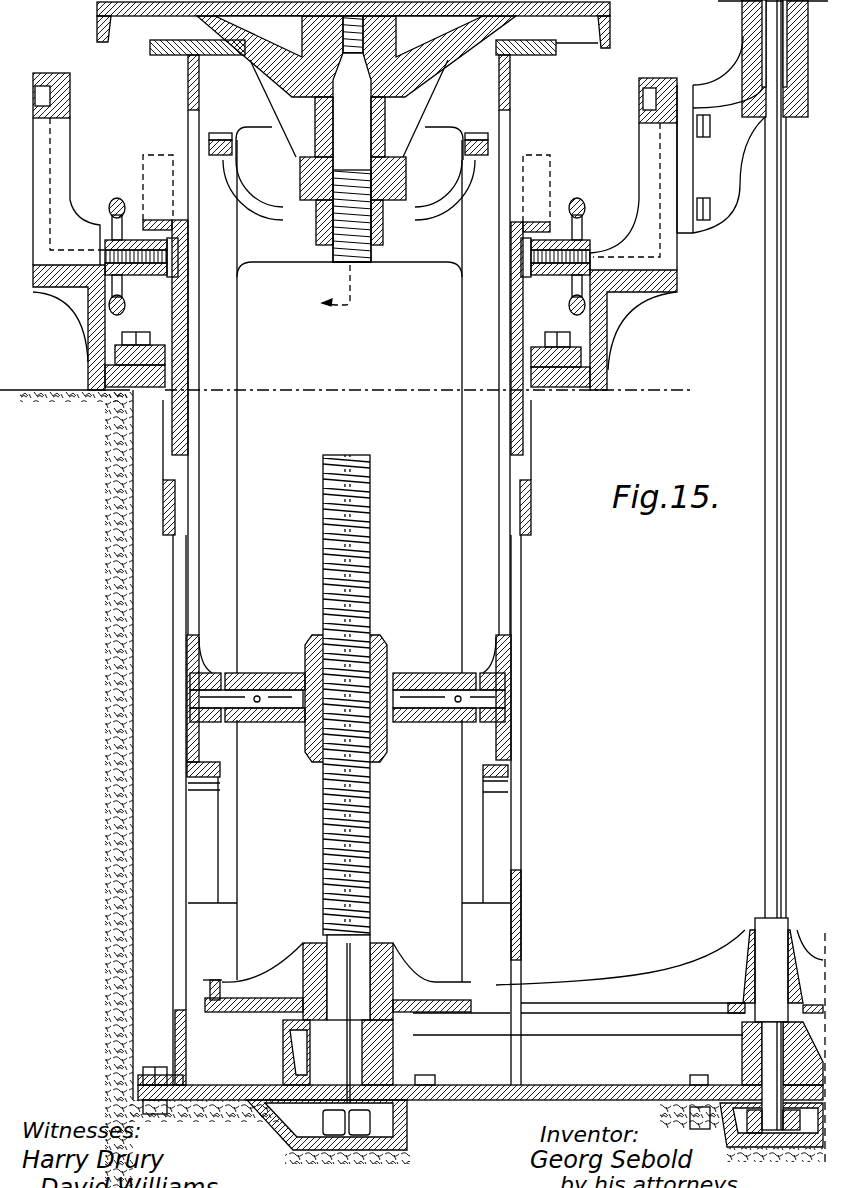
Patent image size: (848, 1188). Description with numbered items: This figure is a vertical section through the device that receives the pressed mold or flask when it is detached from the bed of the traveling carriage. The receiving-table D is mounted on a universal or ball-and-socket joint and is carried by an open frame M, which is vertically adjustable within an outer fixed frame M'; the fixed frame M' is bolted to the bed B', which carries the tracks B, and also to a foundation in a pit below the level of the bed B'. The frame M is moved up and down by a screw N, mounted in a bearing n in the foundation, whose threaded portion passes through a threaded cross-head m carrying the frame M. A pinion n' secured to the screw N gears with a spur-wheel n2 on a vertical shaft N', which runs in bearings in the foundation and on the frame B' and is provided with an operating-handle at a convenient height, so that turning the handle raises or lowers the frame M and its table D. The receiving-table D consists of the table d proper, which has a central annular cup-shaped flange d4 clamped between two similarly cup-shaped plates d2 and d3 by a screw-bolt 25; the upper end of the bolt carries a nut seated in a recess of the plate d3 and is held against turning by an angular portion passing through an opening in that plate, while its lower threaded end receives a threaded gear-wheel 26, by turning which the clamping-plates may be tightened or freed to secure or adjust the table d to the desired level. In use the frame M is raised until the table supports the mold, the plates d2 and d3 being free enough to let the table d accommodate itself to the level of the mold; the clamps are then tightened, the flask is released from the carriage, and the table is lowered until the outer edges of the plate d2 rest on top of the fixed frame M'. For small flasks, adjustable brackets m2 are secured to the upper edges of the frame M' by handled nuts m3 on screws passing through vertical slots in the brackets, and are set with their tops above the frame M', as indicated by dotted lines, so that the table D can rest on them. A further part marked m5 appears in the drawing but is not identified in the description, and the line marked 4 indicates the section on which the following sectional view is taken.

The table proper d is at (446, 24).
The central annular cup-shaped flange d4 is at (353, 39).
The cup-shaped clamping-plate d3 is at (356, 56).
The cup-shaped clamping-plate d2 is at (348, 152).
The receiving-table D is at (553, 83).
The tracks B is at (355, 171).
The bed B' is at (355, 327).
The open frame M is at (349, 518).
The outer fixed frame M' is at (344, 810).
The threaded cross-head m is at (290, 672).
The adjustable brackets m2 is at (349, 345).
The handled nuts m3 is at (555, 256).
The bolt m5 is at (141, 256).
The screw-bolt 25 is at (352, 139).
The threaded gear-wheel 26 is at (349, 190).
The section line 4 is at (331, 297).
The screw N is at (342, 695).
The vertical shaft N' is at (772, 583).
The bearing n is at (480, 1085).
The pinion n' is at (337, 1022).
The spur-wheel n2 is at (633, 978).